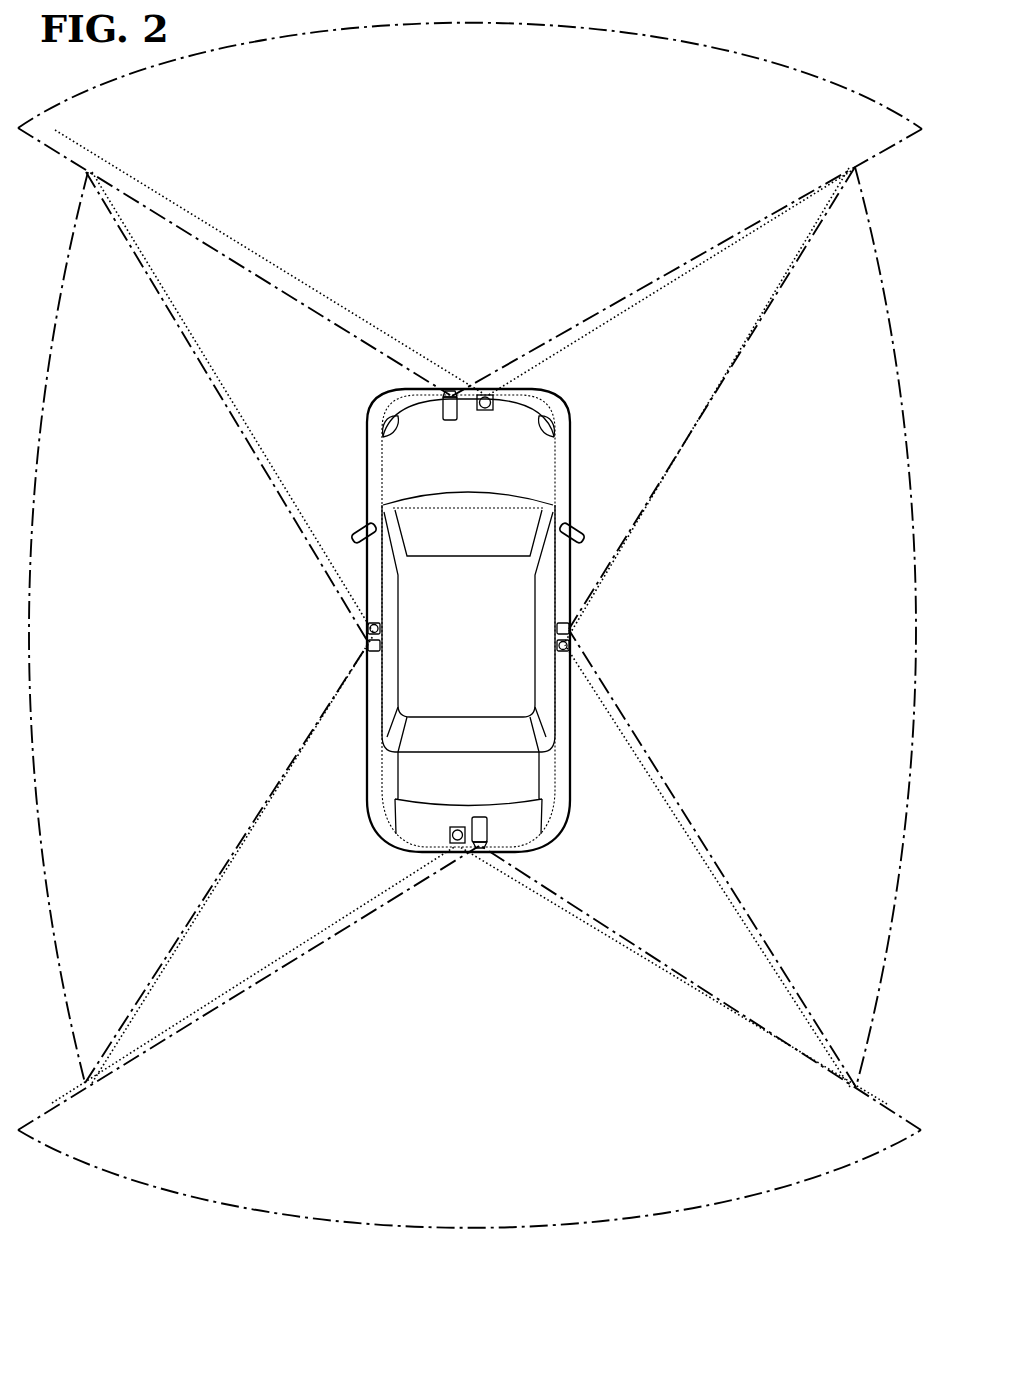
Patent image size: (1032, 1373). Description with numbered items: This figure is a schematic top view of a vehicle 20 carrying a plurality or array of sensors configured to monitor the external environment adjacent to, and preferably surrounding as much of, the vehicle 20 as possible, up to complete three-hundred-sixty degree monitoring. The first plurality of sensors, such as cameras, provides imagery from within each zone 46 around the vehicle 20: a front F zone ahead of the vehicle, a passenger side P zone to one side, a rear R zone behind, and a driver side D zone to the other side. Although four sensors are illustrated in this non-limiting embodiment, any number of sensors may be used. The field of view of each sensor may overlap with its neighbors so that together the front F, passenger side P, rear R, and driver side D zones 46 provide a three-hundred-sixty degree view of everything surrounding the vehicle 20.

The vehicle 20 is at (455, 648).
The zone 46 is at (889, 271).
The front zone F is at (453, 263).
The rear zone R is at (469, 975).
The driver side zone D is at (232, 627).
The passenger side zone P is at (707, 627).